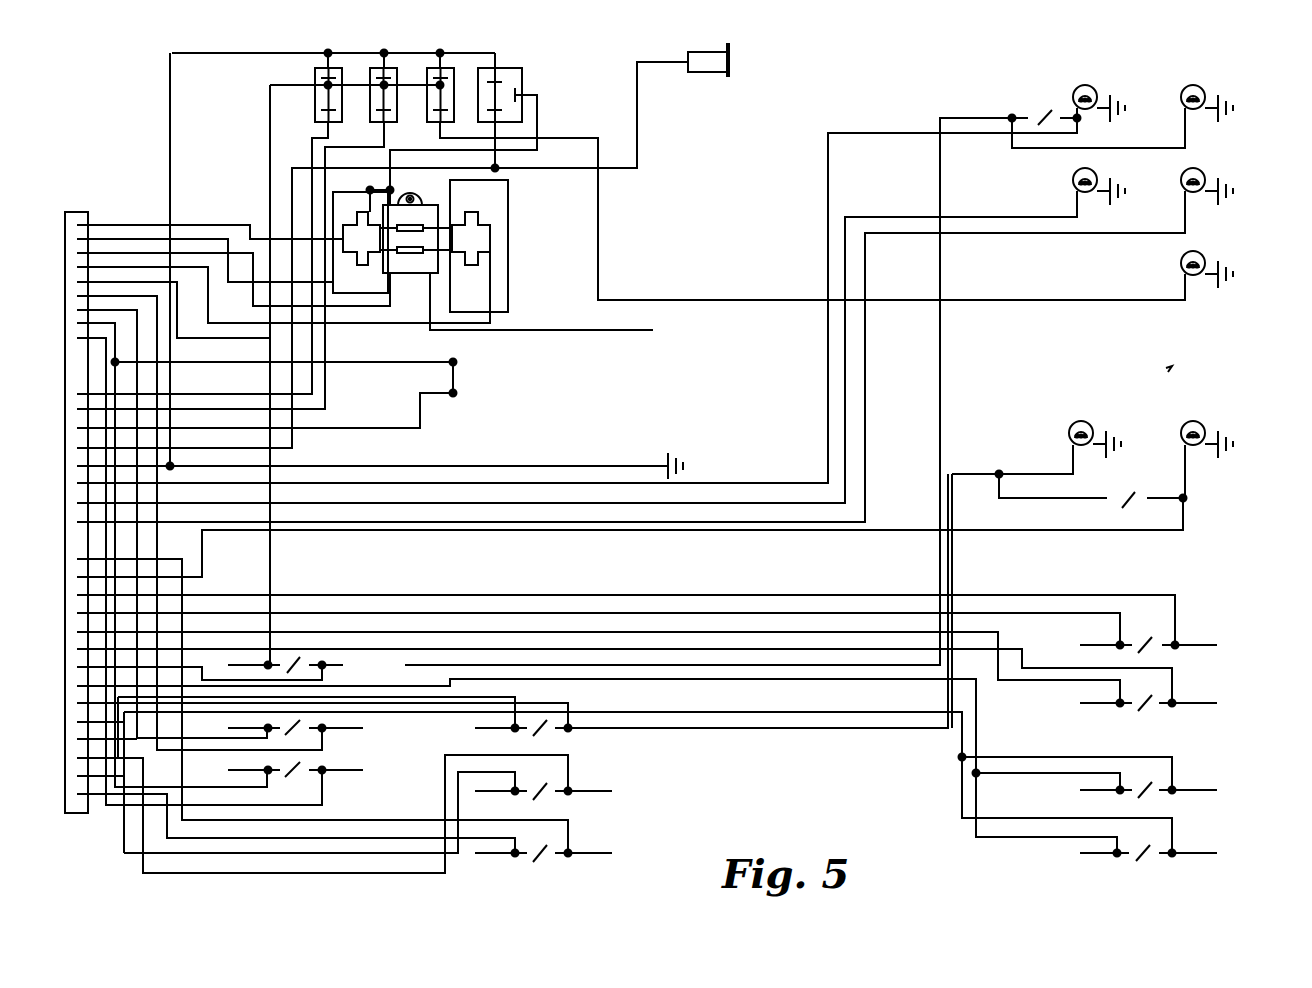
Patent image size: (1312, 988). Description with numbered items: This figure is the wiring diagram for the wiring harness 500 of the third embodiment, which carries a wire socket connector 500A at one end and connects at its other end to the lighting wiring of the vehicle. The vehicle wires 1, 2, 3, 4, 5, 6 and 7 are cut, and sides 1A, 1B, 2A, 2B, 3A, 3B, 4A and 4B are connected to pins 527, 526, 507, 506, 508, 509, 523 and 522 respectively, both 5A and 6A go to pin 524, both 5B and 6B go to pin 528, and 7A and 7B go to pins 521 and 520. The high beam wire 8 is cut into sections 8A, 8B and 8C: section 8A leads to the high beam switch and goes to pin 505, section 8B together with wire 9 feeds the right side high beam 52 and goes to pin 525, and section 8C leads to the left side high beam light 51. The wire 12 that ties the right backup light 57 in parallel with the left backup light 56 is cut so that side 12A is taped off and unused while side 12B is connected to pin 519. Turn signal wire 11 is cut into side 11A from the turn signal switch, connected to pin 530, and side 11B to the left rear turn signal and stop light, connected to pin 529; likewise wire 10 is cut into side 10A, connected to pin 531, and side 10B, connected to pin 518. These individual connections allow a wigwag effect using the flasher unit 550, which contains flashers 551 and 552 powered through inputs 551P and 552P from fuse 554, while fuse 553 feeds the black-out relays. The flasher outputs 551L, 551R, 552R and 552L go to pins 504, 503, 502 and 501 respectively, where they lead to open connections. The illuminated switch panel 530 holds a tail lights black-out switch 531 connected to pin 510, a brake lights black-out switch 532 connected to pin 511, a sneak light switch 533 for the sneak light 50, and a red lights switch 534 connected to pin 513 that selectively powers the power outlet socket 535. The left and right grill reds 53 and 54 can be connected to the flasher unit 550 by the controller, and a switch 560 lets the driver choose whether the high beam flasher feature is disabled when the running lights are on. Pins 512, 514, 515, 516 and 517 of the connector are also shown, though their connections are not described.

The wiring harness 500 is at (1170, 370).
The wire socket connector 500A is at (88, 212).
The pin 501 is at (188, 228).
The pin 502 is at (183, 256).
The pin 503 is at (211, 275).
The pin 504 is at (261, 287).
The pin 505 is at (151, 375).
The pin 506 is at (177, 519).
The pin 507 is at (150, 520).
The pin 508 is at (243, 551).
The pin 509 is at (177, 567).
The pin 510 is at (180, 263).
The pin 511 is at (208, 270).
The connector pin 512 is at (243, 400).
The pin 513 is at (360, 260).
The connector pin 514 (ground) 514 is at (358, 266).
The connector pin 515 is at (555, 300).
The connector pin 516 is at (555, 352).
The connector pin 517 is at (609, 361).
The pin 518 is at (300, 702).
The pin 519 is at (608, 542).
The pin 520 is at (604, 616).
The pin 521 is at (576, 625).
The pin 522 is at (576, 663).
The pin 523 is at (602, 672).
The pin 524 is at (177, 669).
The pin 525 is at (576, 765).
The pin 526 is at (300, 726).
The pin 527 is at (602, 782).
The pin 528 is at (85, 740).
The pin 529 is at (300, 811).
The illuminated switch panel 530 is at (534, 63).
The tail lights black-out switch 531 is at (304, 35).
The brake lights black-out switch 532 is at (378, 73).
The sneak light switch 533 is at (430, 73).
The red lights switch 534 is at (508, 64).
The power outlet socket 535 is at (733, 60).
The flasher unit 550 is at (527, 214).
The flasher 551 is at (479, 246).
The flasher output 551L is at (498, 226).
The flasher output 551R is at (476, 199).
The flasher input 551P is at (464, 265).
The flasher 552 is at (360, 242).
The flasher output 552L is at (348, 223).
The flasher input 552P is at (366, 227).
The flasher output 552R is at (376, 264).
The fuse 553 is at (432, 280).
The fuse 554 is at (418, 215).
The switch 560 is at (474, 378).
The wire 1 is at (471, 726).
The wire side 1A is at (501, 741).
The wire side 1B is at (572, 732).
The wire 2 is at (371, 745).
The wire side 2A is at (235, 728).
The wire side 2B is at (336, 740).
The wire 3 is at (371, 798).
The wire side 3A is at (235, 770).
The wire side 3B is at (336, 782).
The wire 4 is at (1068, 711).
The wire side 4A is at (1106, 690).
The wire side 4B is at (1188, 690).
The wire 5 is at (1068, 798).
The wire side 5A is at (1106, 777).
The wire side 5B is at (1188, 777).
The wire 6 is at (1068, 861).
The wire side 6A is at (1104, 840).
The wire side 6B is at (1188, 840).
The wire 7 is at (1078, 645).
The wire side 7A is at (1106, 631).
The wire side 7B is at (1189, 631).
The wire 8 is at (322, 662).
The wire section 8A is at (241, 665).
The wire section 8B is at (1008, 115).
The wire section 8C is at (1073, 116).
The wire 9 is at (1185, 135).
The wire 10 is at (578, 840).
The wire side 10A is at (501, 863).
The wire side 10B is at (583, 863).
The wire 11 is at (578, 783).
The wire side 11A is at (501, 802).
The wire side 11B is at (587, 802).
The wire 12 is at (1024, 524).
The wire side 12A is at (995, 468).
The wire side 12B is at (1186, 500).
The sneak light 50 is at (1207, 259).
The left side high beam light 51 is at (1101, 94).
The right side high beam 52 is at (1207, 94).
The left side grill red 53 is at (1100, 177).
The right side grill red 54 is at (1207, 175).
The left backup light 56 is at (1095, 428).
The right backup light 57 is at (1207, 428).